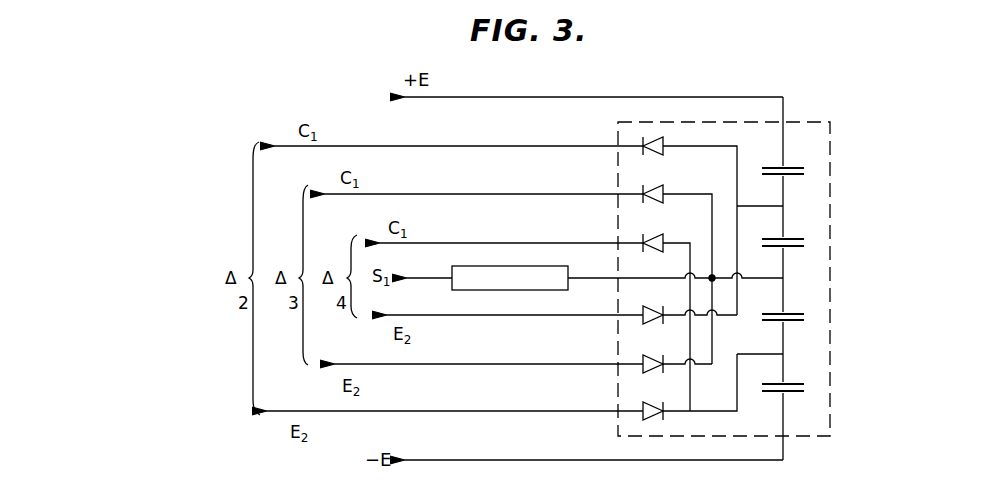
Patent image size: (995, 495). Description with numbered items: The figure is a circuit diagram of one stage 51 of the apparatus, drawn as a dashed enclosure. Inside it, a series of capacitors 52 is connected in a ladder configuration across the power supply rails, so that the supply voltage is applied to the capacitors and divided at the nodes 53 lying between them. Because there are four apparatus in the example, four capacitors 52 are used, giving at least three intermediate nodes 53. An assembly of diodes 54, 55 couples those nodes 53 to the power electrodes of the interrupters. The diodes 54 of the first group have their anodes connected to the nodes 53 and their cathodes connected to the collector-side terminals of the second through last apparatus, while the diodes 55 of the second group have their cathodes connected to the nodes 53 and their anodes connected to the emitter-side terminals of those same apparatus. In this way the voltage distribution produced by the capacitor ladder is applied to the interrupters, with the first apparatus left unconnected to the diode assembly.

The stage 51 is at (830, 256).
The capacitors 52 is at (788, 164).
The nodes 53 is at (784, 207).
The diodes 54 is at (655, 153).
The diodes 55 is at (648, 322).